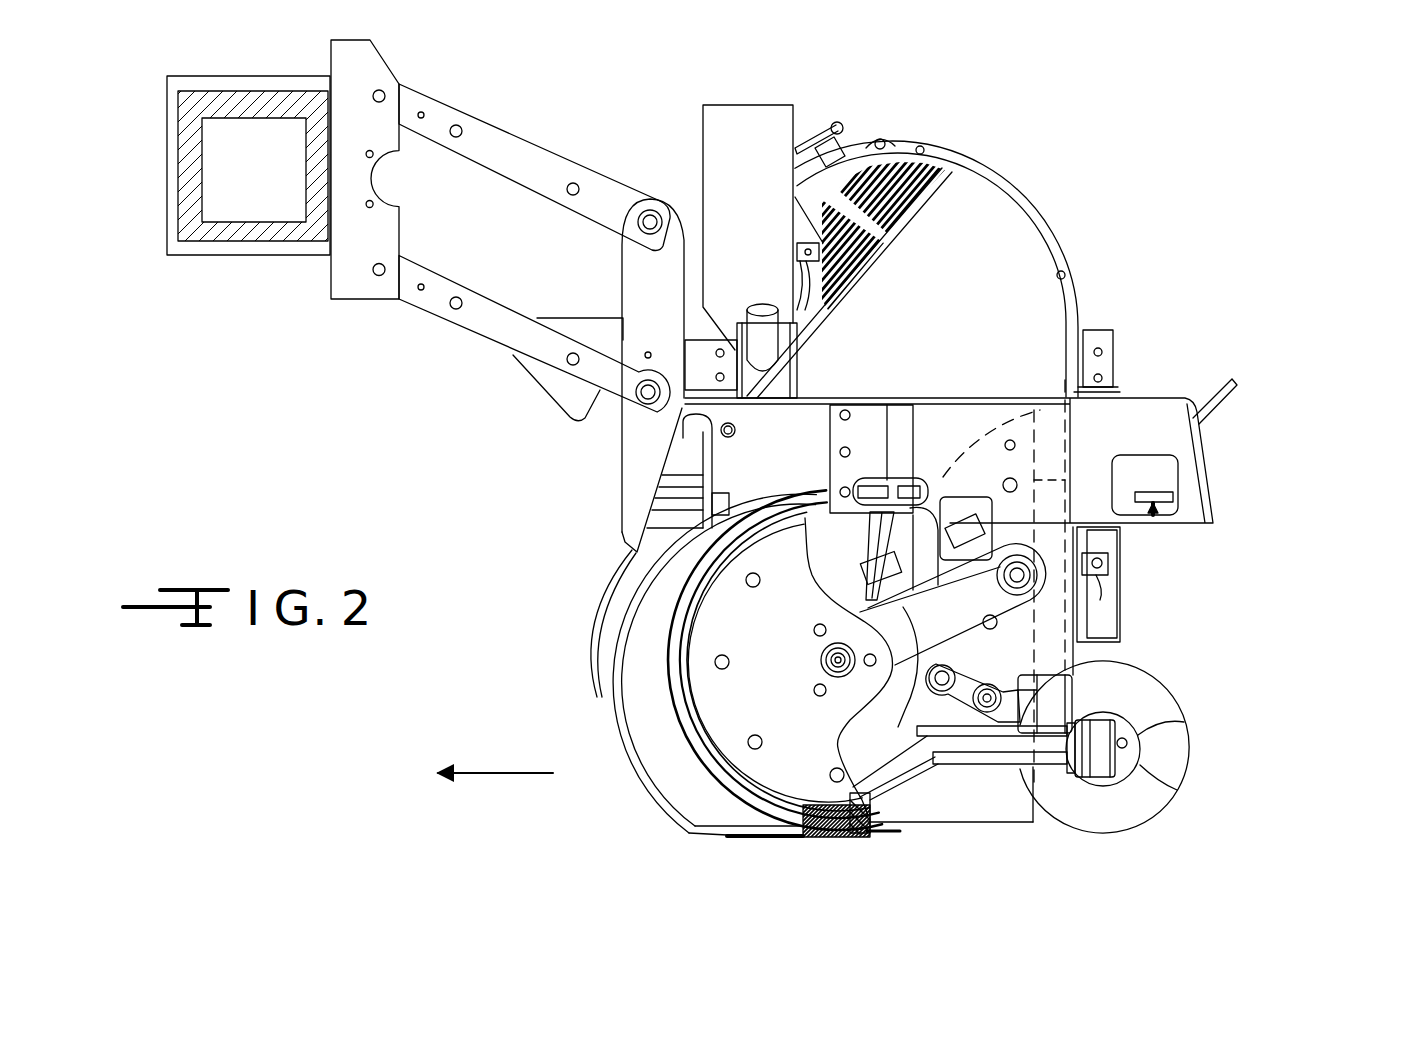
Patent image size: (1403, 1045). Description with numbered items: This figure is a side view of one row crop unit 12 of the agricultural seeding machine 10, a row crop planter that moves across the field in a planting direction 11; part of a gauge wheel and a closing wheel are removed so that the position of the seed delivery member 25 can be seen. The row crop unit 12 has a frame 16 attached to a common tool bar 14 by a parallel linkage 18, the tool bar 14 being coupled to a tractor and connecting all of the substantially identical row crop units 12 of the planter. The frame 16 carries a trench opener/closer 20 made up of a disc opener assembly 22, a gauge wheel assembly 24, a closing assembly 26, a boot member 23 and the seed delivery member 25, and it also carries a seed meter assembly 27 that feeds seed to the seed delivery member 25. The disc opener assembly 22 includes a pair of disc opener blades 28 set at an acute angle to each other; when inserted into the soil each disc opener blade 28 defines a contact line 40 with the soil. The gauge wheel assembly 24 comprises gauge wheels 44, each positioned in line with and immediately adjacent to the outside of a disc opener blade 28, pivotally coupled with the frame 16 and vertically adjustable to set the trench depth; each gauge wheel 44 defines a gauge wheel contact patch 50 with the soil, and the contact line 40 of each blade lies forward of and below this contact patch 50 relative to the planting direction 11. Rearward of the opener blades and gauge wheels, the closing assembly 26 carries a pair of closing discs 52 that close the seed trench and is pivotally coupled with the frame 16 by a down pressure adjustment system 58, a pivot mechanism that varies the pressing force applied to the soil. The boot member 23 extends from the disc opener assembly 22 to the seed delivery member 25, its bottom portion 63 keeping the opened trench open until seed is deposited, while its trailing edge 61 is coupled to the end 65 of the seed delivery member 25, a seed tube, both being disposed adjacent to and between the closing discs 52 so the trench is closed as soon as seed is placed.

The agricultural seeding machine 10 is at (999, 139).
The planting direction 11 is at (482, 773).
The row crop unit 12 is at (900, 876).
The tool bar 14 is at (236, 231).
The frame 16 is at (1100, 427).
The parallel linkage 18 is at (481, 322).
The trench opener/closer 20 is at (700, 831).
The disc opener assembly 22 is at (606, 713).
The boot member 23 is at (958, 815).
The gauge wheel assembly 24 is at (808, 808).
The seed delivery member 25 is at (1048, 713).
The closing assembly 26 is at (1125, 830).
The seed meter assembly 27 is at (1028, 210).
The disc opener blade 28 is at (645, 733).
The contact line 40 is at (760, 837).
The gauge wheel 44 is at (823, 810).
The gauge wheel contact patch 50 is at (833, 837).
The closing disc 52 is at (1163, 783).
The down pressure adjustment system 58 is at (1003, 681).
The trailing edge 61 is at (1050, 780).
The bottom portion 63 is at (1015, 823).
The end 65 is at (1058, 783).